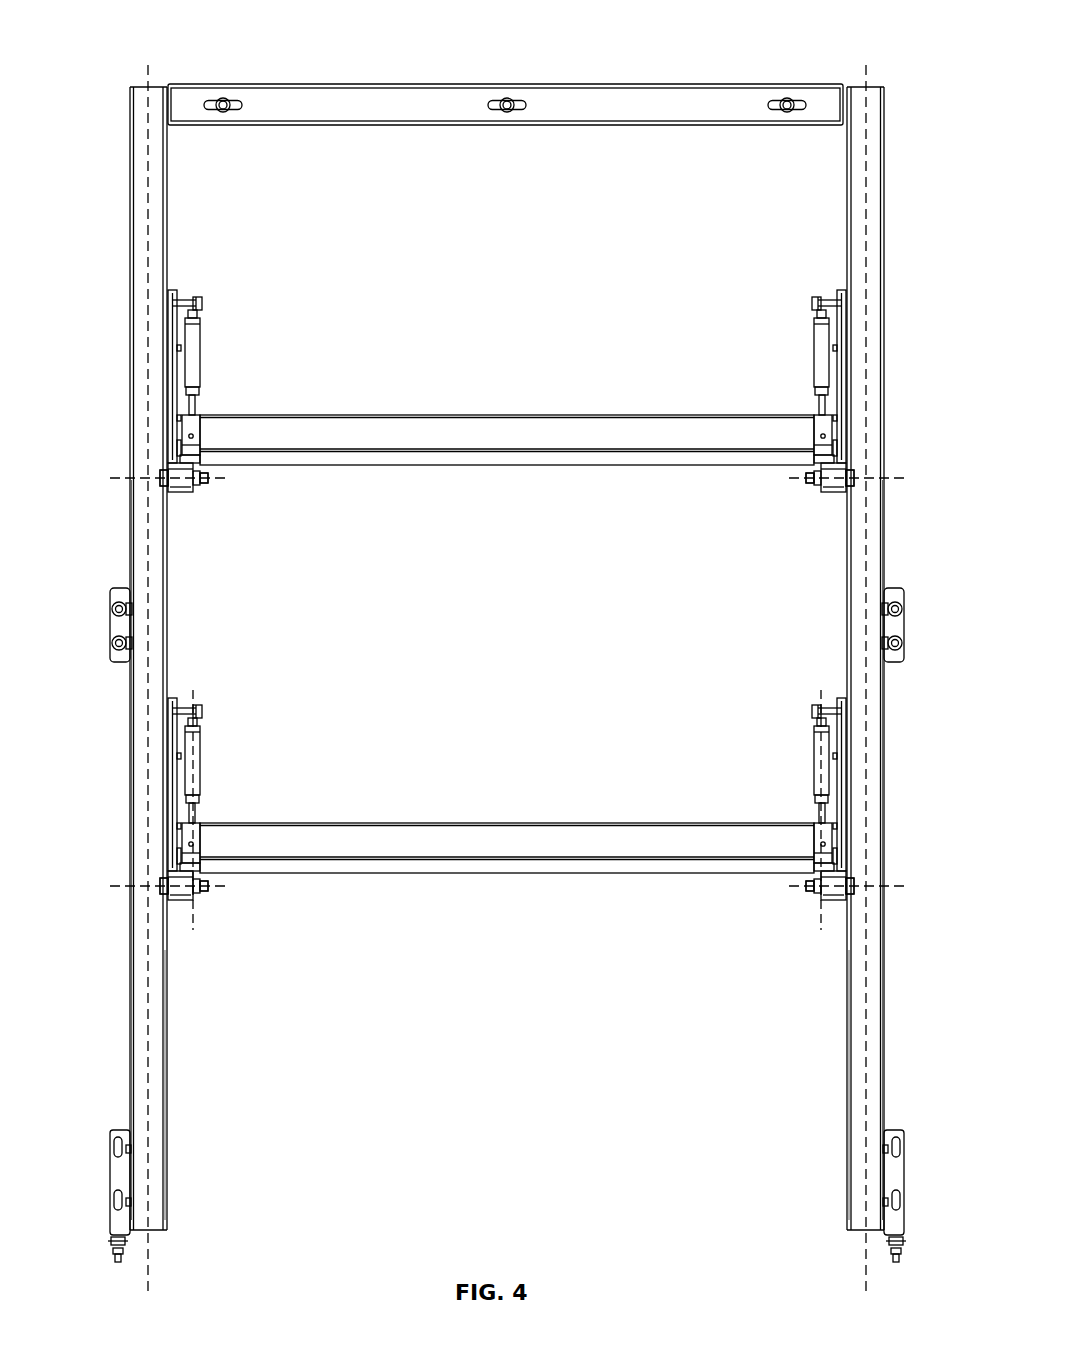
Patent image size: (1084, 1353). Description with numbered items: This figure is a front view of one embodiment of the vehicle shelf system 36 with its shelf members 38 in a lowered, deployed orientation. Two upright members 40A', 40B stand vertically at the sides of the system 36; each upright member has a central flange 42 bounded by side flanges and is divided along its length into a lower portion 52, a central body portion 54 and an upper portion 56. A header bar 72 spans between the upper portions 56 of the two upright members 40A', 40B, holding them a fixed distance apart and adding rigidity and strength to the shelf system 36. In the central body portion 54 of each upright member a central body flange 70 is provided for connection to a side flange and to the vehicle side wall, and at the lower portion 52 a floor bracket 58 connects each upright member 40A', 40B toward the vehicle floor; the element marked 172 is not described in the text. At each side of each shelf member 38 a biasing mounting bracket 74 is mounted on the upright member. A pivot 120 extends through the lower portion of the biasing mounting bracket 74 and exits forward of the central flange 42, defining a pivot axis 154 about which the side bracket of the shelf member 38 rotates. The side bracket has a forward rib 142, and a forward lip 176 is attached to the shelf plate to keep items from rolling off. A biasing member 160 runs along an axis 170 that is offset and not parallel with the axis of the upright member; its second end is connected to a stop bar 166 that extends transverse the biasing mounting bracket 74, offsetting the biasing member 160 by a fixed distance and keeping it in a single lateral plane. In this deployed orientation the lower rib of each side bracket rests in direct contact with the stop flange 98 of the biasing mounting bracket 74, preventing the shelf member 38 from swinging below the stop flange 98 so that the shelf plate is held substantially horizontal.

The vehicle shelf system 36 is at (535, 58).
The header bar 72 is at (505, 63).
The upright member 40A' is at (98, 681).
The upright member 40B is at (866, 85).
The shelf member 38 is at (113, 190).
The stop bar 166 is at (182, 292).
The upper portion 56 is at (242, 272).
The biasing mounting bracket 74 is at (162, 333).
The biasing member 160 is at (205, 345).
The forward rib 142 is at (200, 430).
The forward lip 176 is at (470, 432).
The stop flange 98 is at (185, 490).
The pivot axis 154 is at (115, 476).
The central flange 42 is at (140, 520).
The pivot 120 is at (210, 480).
The central body flange 70 is at (110, 623).
The central body portion 54 is at (218, 612).
The axis 170 is at (196, 925).
The lower rail portion 172 is at (150, 990).
The lower portion 52 is at (113, 1025).
The floor bracket 58 is at (110, 1170).